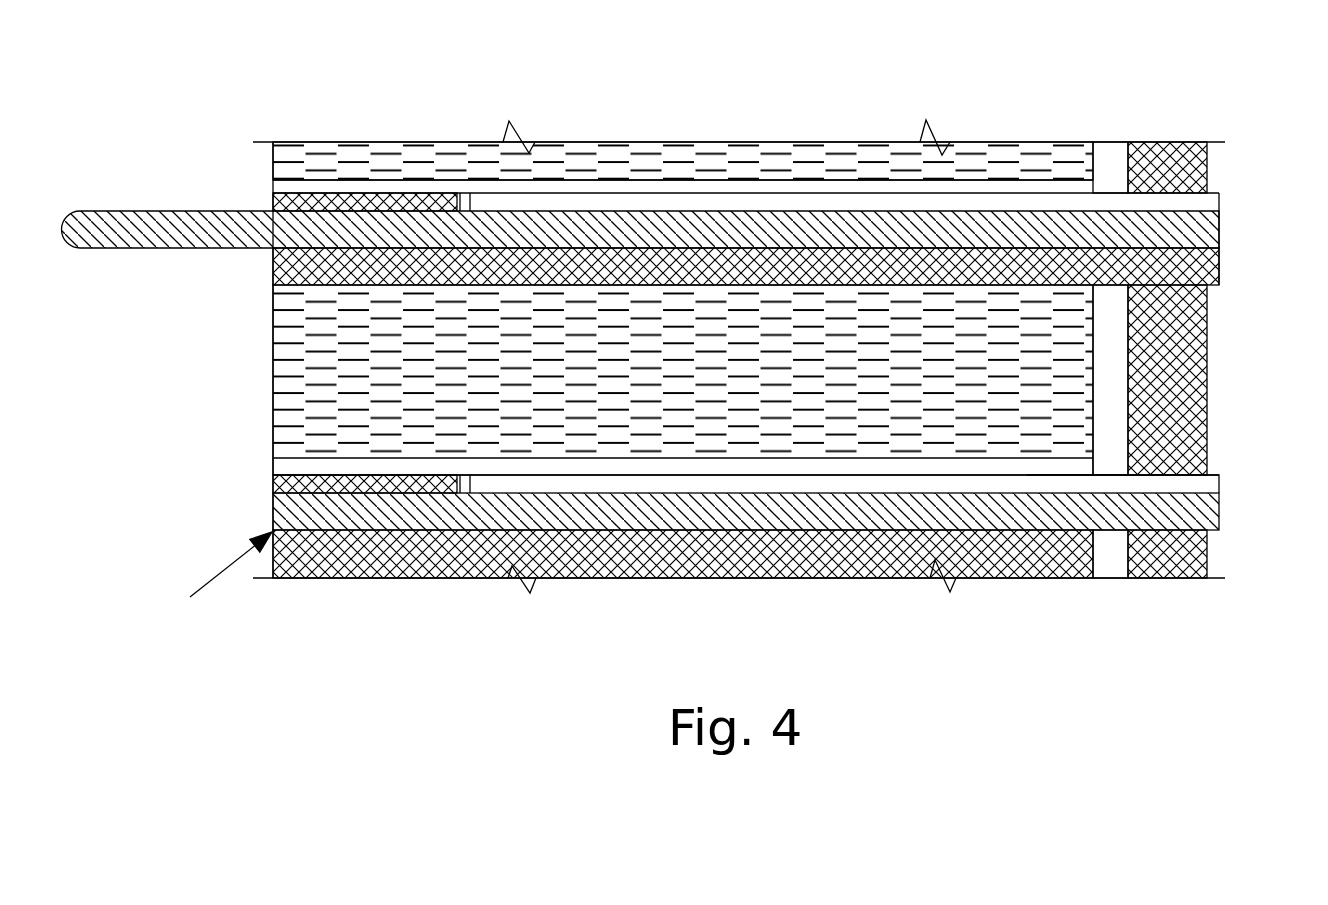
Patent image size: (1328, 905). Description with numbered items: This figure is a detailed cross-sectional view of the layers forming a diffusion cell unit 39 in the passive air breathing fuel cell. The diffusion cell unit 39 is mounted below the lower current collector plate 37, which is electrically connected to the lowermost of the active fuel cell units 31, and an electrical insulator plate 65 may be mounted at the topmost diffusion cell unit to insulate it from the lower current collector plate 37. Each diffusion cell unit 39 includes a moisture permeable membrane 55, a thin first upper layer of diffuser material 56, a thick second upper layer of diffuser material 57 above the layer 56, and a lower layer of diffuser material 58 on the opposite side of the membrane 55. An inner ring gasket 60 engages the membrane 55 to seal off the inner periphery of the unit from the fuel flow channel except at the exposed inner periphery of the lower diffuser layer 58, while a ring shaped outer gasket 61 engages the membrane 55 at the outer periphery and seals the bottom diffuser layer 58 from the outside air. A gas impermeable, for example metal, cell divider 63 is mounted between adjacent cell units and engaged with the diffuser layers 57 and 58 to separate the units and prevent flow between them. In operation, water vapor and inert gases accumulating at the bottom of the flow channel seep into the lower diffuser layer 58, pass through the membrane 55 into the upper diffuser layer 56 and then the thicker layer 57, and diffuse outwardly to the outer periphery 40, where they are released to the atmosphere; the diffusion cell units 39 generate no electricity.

The fuel cell unit 31 is at (272, 165).
The lower current collector plate 37 is at (145, 211).
The diffusion cell unit 39 is at (272, 375).
The outer periphery 40 is at (206, 588).
The moisture permeable membrane 55 is at (1027, 474).
The first upper layer of diffuser material 56 is at (272, 463).
The second upper layer of diffuser material 57 is at (590, 325).
The lower layer of diffuser material 58 is at (1102, 487).
The inner ring gasket 60 is at (1207, 445).
The outer gasket 61 is at (272, 490).
The cell divider 63 is at (476, 522).
The electrical insulator plate 65 is at (272, 285).